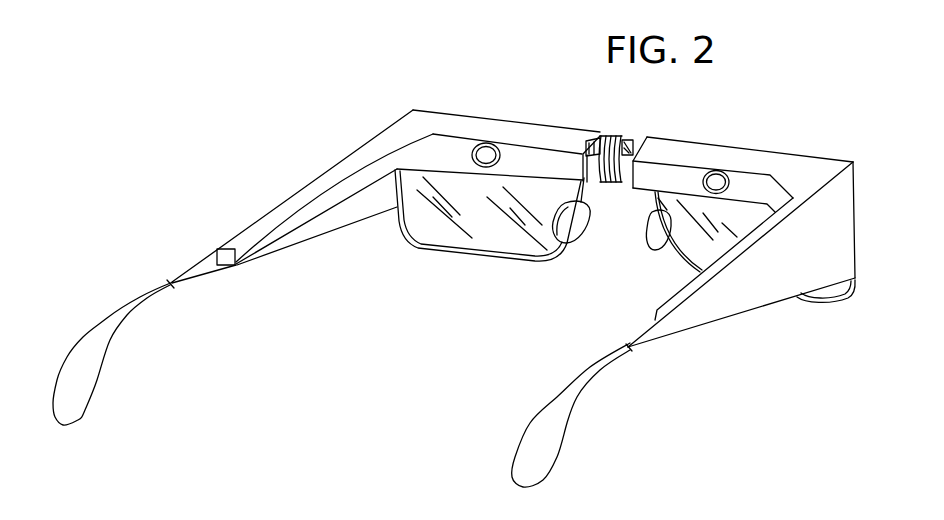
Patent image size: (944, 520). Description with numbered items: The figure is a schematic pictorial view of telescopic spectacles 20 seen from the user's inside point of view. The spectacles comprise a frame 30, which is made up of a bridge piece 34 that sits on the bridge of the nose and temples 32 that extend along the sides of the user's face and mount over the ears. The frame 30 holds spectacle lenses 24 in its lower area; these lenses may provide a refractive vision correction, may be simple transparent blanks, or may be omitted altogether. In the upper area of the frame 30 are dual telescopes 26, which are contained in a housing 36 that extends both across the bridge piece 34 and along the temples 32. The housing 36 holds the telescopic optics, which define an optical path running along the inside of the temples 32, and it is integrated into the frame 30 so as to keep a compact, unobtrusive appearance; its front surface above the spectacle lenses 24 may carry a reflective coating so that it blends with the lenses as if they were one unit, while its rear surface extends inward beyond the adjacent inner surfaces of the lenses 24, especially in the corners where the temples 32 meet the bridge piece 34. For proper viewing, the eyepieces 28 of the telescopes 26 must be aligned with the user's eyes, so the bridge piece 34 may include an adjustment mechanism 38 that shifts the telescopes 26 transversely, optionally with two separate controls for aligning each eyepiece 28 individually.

The telescopic spectacles 20 is at (283, 92).
The spectacle lenses 24 is at (485, 246).
The dual telescopes 26 is at (403, 110).
The eyepieces 28 is at (487, 148).
The frame 30 is at (417, 243).
The temples 32 is at (200, 270).
The bridge piece 34 is at (455, 123).
The housing 36 is at (310, 190).
The adjustment mechanism 38 is at (620, 136).